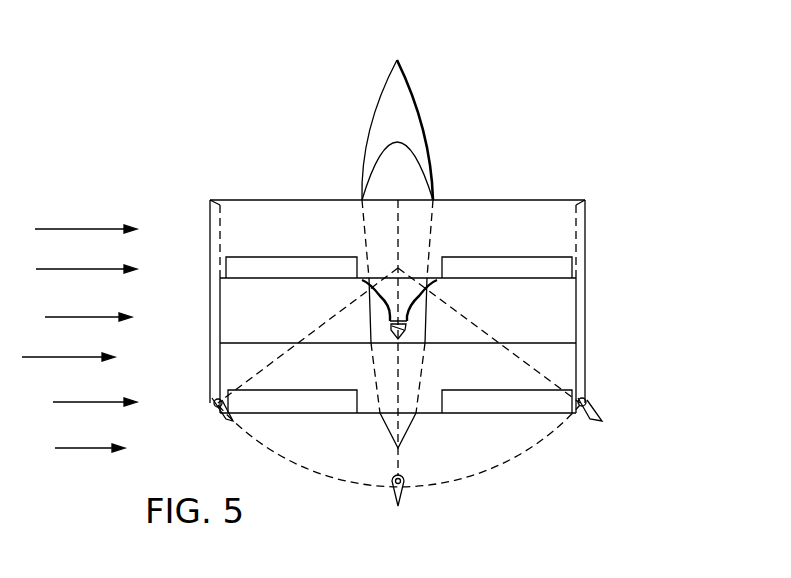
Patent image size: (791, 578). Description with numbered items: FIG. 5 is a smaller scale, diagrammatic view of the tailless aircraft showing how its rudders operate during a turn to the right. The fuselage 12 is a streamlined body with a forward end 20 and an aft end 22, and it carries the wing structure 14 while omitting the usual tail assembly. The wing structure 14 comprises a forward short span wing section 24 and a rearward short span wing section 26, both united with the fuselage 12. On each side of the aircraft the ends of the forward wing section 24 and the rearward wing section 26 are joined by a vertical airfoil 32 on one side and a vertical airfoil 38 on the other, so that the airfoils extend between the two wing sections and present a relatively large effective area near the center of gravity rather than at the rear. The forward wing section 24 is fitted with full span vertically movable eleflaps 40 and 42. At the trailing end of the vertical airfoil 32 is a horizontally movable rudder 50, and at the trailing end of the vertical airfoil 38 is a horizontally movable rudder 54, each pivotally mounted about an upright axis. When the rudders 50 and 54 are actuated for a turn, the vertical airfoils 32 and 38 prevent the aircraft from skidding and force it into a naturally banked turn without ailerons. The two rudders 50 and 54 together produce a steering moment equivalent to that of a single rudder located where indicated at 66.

The fuselage 12 is at (447, 115).
The wing structure 14 is at (443, 295).
The forward end 20 is at (413, 80).
The aft end 22 is at (385, 440).
The forward short span wing section 24 is at (585, 212).
The rearward short span wing section 26 is at (530, 403).
The vertical airfoil 32 is at (212, 310).
The vertical airfoil 38 is at (582, 302).
The eleflap 40 is at (293, 265).
The eleflap 42 is at (520, 265).
The rudder 50 is at (218, 409).
The rudder 54 is at (590, 402).
The single rudder location 66 is at (408, 492).